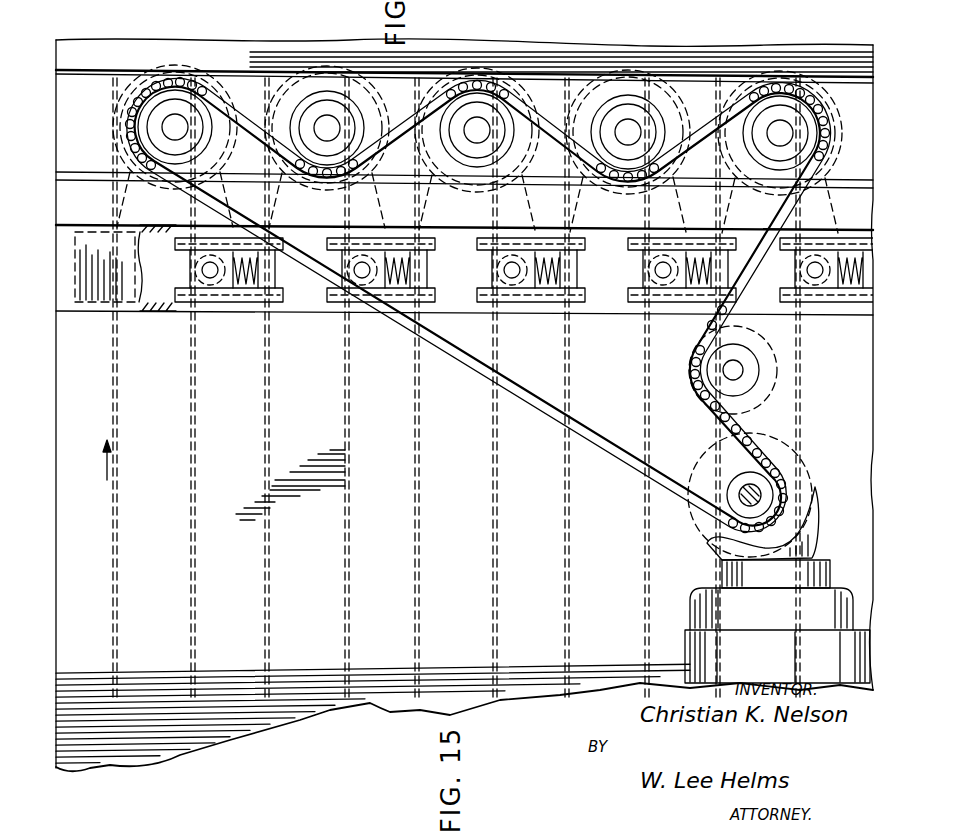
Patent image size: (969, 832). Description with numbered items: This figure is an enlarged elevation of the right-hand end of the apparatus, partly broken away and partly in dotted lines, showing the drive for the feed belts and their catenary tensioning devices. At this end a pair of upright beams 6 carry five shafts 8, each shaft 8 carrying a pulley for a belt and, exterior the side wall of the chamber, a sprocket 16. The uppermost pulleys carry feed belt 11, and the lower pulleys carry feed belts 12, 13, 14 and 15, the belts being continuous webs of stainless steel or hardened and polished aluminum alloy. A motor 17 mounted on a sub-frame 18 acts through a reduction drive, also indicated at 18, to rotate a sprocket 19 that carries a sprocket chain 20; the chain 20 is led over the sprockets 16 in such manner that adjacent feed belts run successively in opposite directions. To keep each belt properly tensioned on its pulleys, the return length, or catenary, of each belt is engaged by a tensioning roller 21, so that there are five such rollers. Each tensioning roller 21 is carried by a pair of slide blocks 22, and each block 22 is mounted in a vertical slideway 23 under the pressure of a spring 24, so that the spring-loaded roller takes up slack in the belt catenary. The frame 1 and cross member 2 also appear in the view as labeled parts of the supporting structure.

The frame 1 is at (100, 230).
The cross member 2 is at (630, 258).
The upright beam 6 is at (92, 104).
The shaft 8 is at (166, 116).
The feed belt 11 is at (117, 433).
The feed belt 12 is at (270, 402).
The feed belt 13 is at (418, 418).
The feed belt 14 is at (568, 510).
The feed belt 15 is at (803, 397).
The sprocket 16 is at (175, 122).
The motor 17 is at (786, 654).
The sub-frame 18 is at (817, 530).
The sprocket 19 is at (737, 478).
The sprocket chain 20 is at (127, 124).
The tensioning roller 21 is at (187, 267).
The slide block 22 is at (228, 290).
The vertical slideway 23 is at (256, 306).
The spring 24 is at (237, 256).